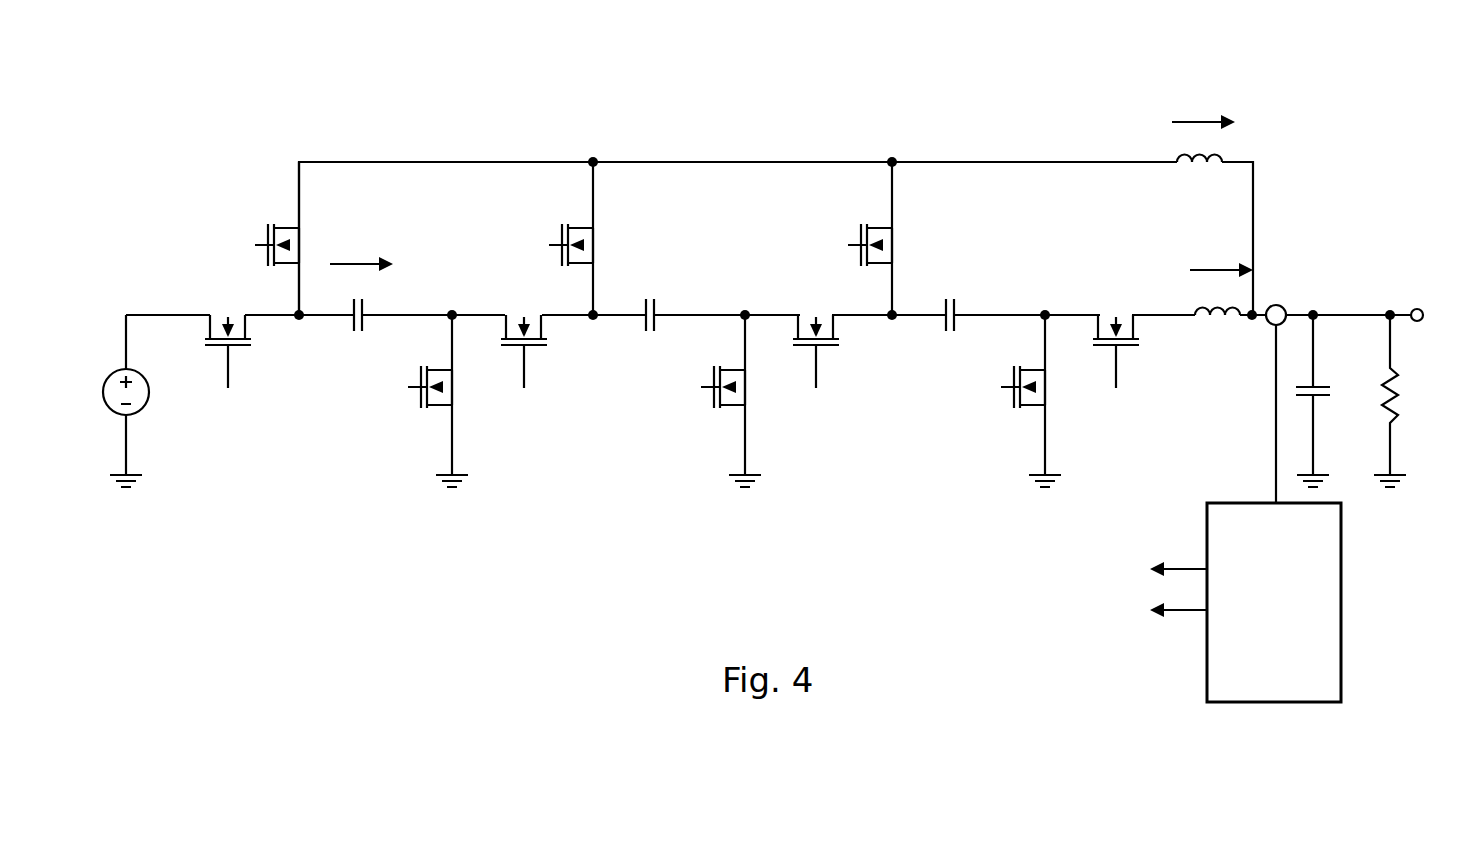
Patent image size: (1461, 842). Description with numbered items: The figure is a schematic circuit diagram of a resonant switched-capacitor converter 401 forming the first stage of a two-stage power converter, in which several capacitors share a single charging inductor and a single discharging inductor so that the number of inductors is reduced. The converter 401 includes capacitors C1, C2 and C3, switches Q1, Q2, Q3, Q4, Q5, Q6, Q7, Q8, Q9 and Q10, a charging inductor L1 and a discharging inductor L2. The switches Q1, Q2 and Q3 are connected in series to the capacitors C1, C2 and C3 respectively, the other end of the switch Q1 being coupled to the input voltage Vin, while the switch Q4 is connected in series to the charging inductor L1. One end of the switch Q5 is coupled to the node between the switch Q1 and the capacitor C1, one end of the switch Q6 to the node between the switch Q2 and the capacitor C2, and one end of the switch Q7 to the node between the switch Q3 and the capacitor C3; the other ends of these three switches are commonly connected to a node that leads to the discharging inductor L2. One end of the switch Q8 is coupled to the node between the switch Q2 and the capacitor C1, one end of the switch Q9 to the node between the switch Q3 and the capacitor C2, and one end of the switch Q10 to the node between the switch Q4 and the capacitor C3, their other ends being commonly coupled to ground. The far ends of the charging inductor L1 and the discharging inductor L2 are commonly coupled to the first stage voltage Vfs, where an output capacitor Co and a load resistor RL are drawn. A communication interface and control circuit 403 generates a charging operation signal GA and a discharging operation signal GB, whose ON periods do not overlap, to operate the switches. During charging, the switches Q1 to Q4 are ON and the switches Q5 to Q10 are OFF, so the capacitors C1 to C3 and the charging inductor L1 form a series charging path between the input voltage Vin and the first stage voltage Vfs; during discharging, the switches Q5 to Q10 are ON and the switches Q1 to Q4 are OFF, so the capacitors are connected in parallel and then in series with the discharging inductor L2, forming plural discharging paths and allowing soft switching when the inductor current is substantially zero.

The resonant switched-capacitor converter 401 is at (1324, 165).
The communication interface and control circuit 403 is at (1245, 503).
The switch Q1 is at (224, 351).
The switch Q2 is at (517, 351).
The switch Q3 is at (811, 351).
The switch Q4 is at (1123, 351).
The switch Q5 is at (266, 238).
The switch Q6 is at (563, 238).
The switch Q7 is at (859, 238).
The switch Q8 is at (425, 401).
The switch Q9 is at (720, 401).
The switch Q10 is at (1017, 401).
The capacitor C1 is at (361, 306).
The capacitor C2 is at (658, 306).
The capacitor C3 is at (957, 306).
The charging inductor L1 is at (1217, 299).
The discharging inductor L2 is at (1199, 146).
The output capacitor Co is at (1323, 401).
The load resistor RL is at (1405, 401).
The input voltage Vin is at (108, 401).
The first stage voltage Vfs is at (1420, 297).